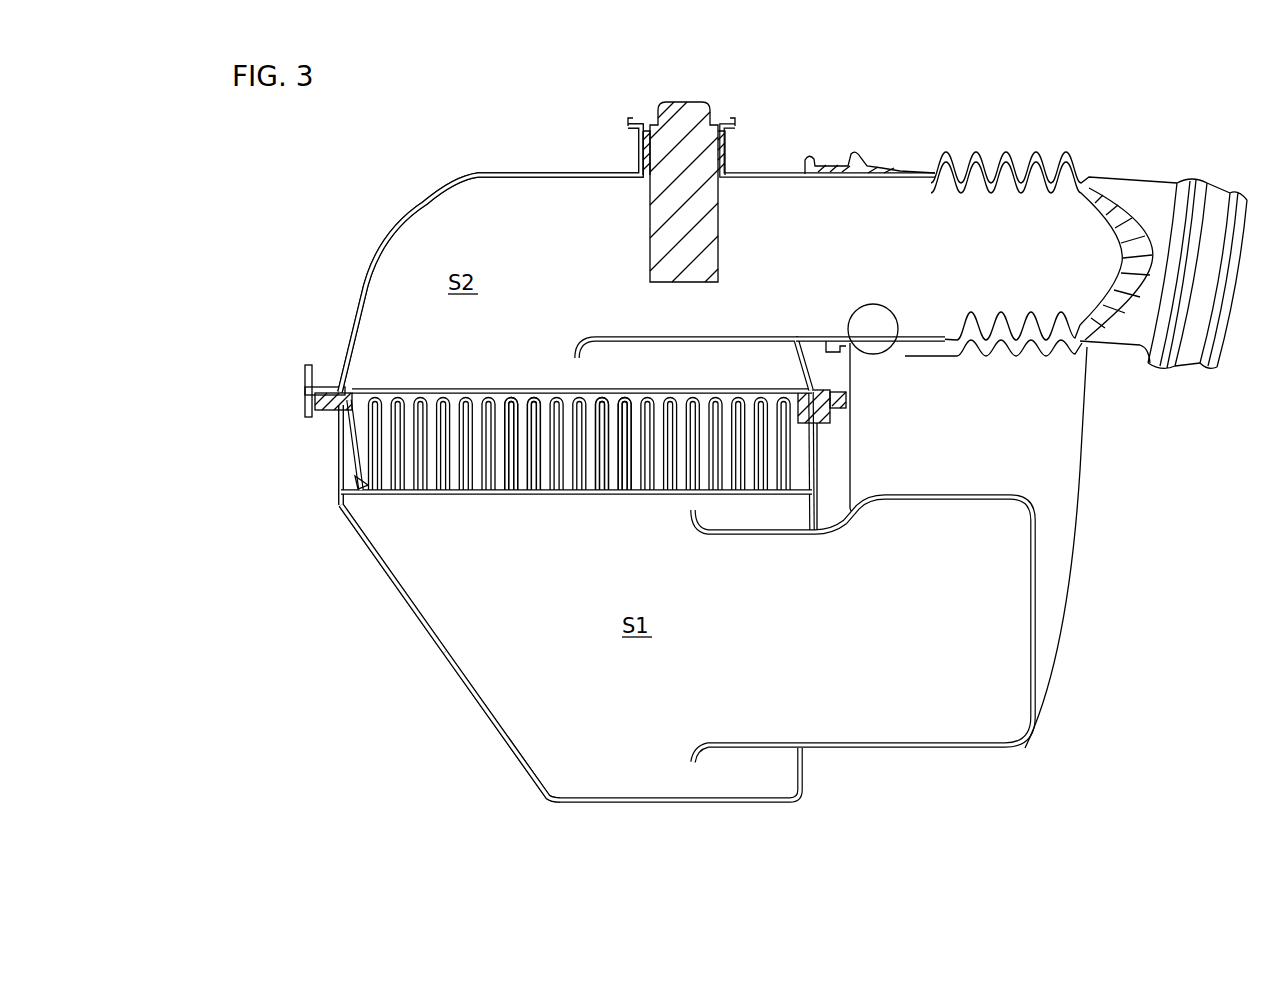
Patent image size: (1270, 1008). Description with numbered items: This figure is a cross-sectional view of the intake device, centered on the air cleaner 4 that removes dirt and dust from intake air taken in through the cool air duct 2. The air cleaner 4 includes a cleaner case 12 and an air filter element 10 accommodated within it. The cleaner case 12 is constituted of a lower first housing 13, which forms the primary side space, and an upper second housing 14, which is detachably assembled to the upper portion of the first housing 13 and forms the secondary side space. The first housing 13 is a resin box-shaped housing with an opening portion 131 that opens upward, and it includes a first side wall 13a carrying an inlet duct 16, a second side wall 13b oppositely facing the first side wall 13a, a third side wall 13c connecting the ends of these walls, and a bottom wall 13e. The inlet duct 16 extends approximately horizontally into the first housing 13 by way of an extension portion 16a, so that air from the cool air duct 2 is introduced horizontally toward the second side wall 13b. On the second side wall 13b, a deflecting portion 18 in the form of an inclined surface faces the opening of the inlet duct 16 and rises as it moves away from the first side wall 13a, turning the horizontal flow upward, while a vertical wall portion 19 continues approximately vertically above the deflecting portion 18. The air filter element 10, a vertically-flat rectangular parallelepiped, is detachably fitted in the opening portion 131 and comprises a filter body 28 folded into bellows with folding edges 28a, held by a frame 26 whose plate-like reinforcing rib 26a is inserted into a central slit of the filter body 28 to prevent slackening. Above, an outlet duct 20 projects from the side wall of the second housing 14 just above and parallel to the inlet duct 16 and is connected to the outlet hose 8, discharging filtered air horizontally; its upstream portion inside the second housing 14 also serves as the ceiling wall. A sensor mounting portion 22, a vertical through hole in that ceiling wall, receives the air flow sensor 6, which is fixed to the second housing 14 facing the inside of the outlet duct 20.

The cool air duct 2 is at (1049, 571).
The air cleaner 4 is at (492, 788).
The air flow sensor 6 is at (718, 224).
The outlet hose 8 is at (918, 180).
The air filter element 10 is at (360, 490).
The cleaner case 12 is at (490, 259).
The first housing 13 is at (826, 480).
The first side wall 13a is at (818, 510).
The second side wall 13b is at (238, 465).
The third side wall 13c is at (487, 651).
The bottom wall 13e is at (650, 802).
The second housing 14 is at (476, 168).
The inlet duct 16 is at (824, 758).
The extension portion 16a is at (722, 748).
The deflecting portion 18 is at (405, 600).
The vertical wall portion 19 is at (334, 470).
The outlet duct 20 is at (899, 337).
The sensor mounting portion 22 is at (640, 150).
The frame 26 is at (334, 437).
The reinforcing rib 26a is at (425, 390).
The filter body 28 is at (372, 392).
The folding edges 28a is at (545, 495).
The opening portion 131 is at (822, 431).